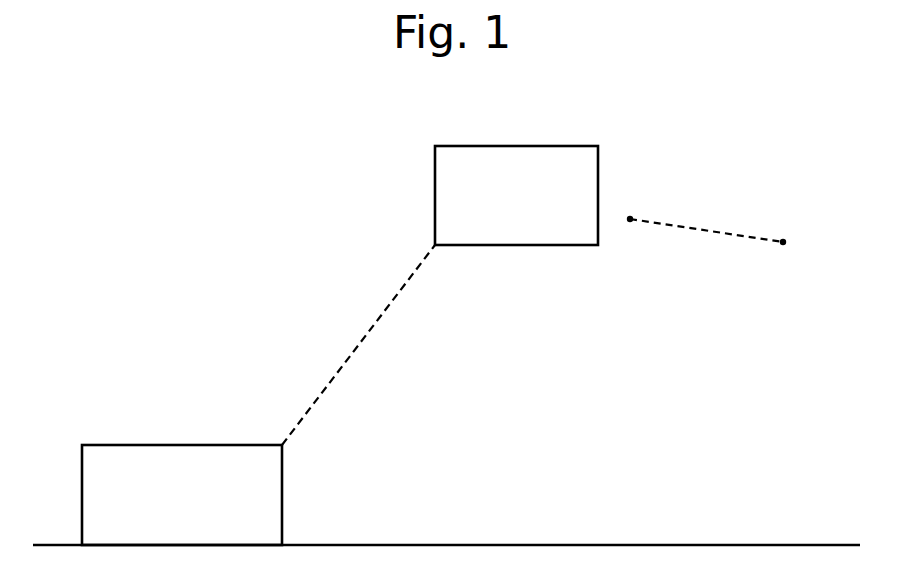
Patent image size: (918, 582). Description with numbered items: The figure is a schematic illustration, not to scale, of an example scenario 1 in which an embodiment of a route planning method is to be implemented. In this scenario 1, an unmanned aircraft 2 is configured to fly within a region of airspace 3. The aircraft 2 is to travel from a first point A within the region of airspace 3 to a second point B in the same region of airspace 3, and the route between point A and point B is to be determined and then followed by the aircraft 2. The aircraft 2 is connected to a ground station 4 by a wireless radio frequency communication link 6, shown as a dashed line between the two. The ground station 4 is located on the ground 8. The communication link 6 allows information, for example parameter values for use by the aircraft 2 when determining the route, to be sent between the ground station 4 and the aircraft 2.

The scenario 1 is at (693, 158).
The unmanned aircraft 2 is at (487, 146).
The region of airspace 3 is at (167, 297).
The ground station 4 is at (282, 498).
The communication link 6 is at (335, 375).
The ground 8 is at (462, 543).
The first point A is at (701, 235).
The second point B is at (782, 258).